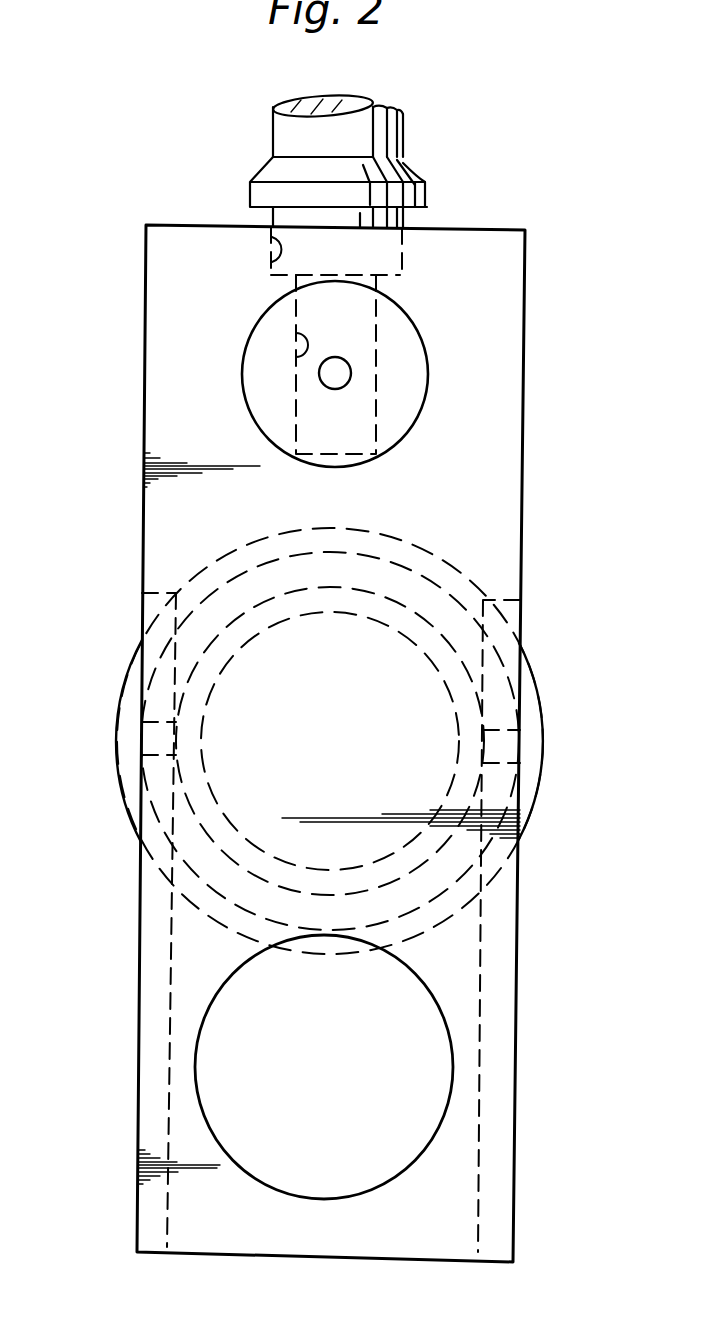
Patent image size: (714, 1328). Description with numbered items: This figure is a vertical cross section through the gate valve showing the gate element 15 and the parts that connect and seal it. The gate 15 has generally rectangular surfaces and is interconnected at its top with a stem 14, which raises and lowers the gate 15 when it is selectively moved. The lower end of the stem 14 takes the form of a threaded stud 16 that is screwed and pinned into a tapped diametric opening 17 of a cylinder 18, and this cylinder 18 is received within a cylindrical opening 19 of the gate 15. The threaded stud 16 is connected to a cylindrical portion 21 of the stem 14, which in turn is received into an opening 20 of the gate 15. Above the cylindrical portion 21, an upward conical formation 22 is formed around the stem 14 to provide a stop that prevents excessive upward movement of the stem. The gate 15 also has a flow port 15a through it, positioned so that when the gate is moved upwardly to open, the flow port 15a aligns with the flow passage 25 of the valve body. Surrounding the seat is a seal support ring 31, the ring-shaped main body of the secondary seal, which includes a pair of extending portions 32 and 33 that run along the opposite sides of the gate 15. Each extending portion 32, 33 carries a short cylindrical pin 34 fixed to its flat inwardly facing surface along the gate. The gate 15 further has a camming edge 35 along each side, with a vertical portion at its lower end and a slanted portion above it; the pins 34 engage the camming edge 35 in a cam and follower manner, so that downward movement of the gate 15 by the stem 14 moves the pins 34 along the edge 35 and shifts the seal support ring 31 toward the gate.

The stem 14 is at (405, 132).
The upward conical formation 22 is at (425, 188).
The cylindrical portion 21 is at (403, 222).
The opening 20 is at (270, 263).
The threaded stud 16 is at (293, 415).
The tapped diametric opening 17 is at (298, 335).
The cylindrical opening 19 is at (407, 330).
The cylinder 18 is at (408, 362).
The gate element 15 is at (525, 464).
The flow port 15a is at (203, 1104).
The seal support ring 31 is at (452, 572).
The flow passage 25 is at (258, 845).
The extending portion 32 is at (119, 680).
The extending portion 33 is at (533, 690).
The short cylindrical pin 34 is at (140, 735).
The camming edge 35 is at (157, 975).